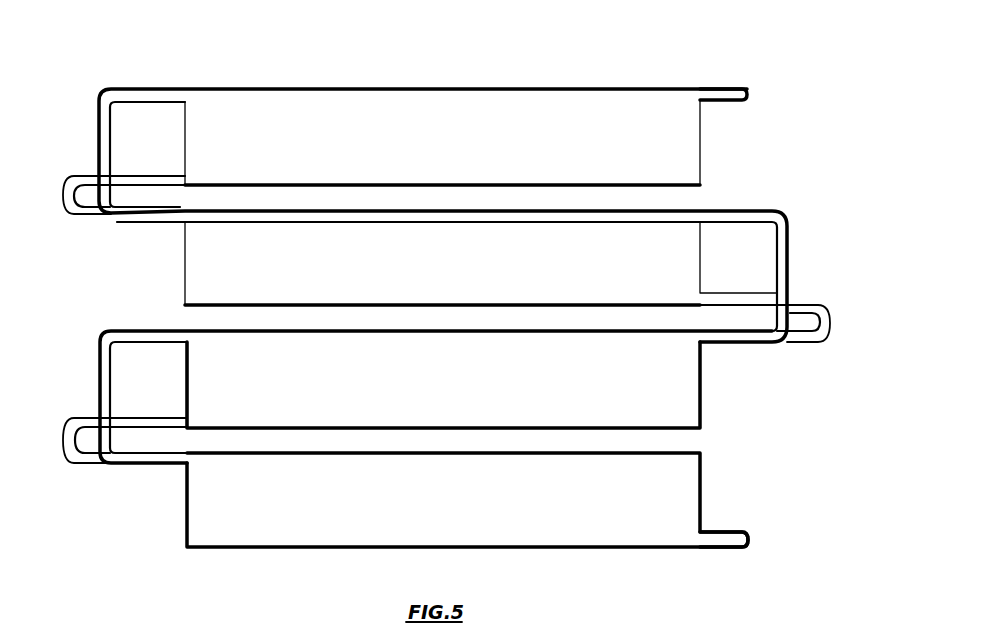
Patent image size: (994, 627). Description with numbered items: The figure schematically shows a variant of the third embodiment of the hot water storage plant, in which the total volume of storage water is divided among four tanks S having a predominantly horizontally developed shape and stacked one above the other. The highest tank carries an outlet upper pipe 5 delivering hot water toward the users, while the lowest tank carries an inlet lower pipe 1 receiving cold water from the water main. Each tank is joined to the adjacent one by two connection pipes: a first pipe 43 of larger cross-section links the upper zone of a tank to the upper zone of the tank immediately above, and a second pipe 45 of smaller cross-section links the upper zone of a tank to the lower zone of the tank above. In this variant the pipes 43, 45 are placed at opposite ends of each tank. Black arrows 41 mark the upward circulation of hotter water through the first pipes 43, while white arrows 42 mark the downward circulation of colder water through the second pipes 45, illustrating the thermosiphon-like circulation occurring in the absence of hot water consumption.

The inlet lower pipe 1 is at (710, 543).
The outlet upper pipe 5 is at (720, 95).
The black arrows 41 is at (404, 241).
The white arrows 42 is at (451, 319).
The first pipe 43 is at (99, 130).
The second pipe 45 is at (118, 176).
The tanks S is at (460, 89).